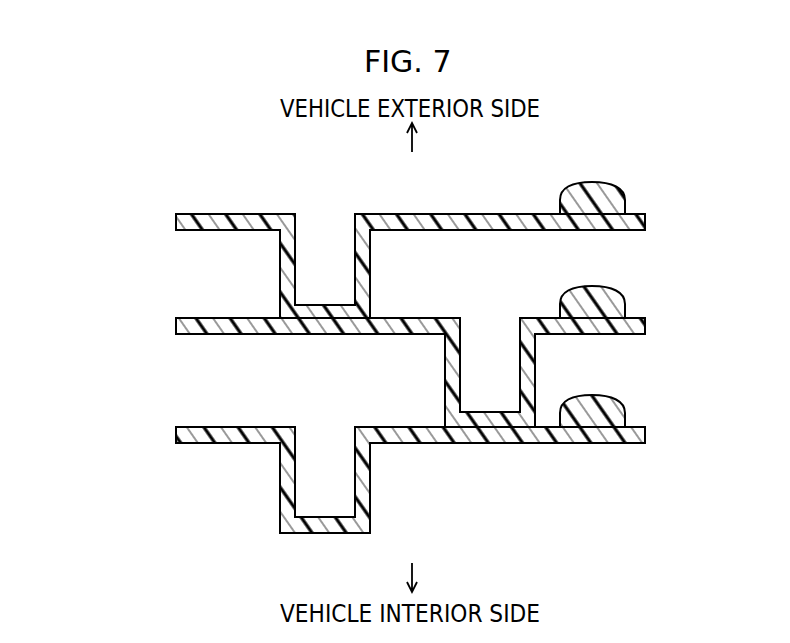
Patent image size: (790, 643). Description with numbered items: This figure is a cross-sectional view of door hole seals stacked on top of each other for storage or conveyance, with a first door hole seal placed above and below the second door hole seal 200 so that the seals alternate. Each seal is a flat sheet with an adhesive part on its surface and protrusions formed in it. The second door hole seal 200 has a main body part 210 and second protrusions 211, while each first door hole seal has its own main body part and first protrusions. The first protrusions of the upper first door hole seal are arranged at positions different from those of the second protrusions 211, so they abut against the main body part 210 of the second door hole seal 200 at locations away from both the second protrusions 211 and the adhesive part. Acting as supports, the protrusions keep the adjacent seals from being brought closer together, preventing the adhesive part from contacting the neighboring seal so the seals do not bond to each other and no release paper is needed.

The second door hole seal 200 is at (366, 334).
The main body part 210 is at (231, 318).
The second protrusion 211 is at (445, 378).